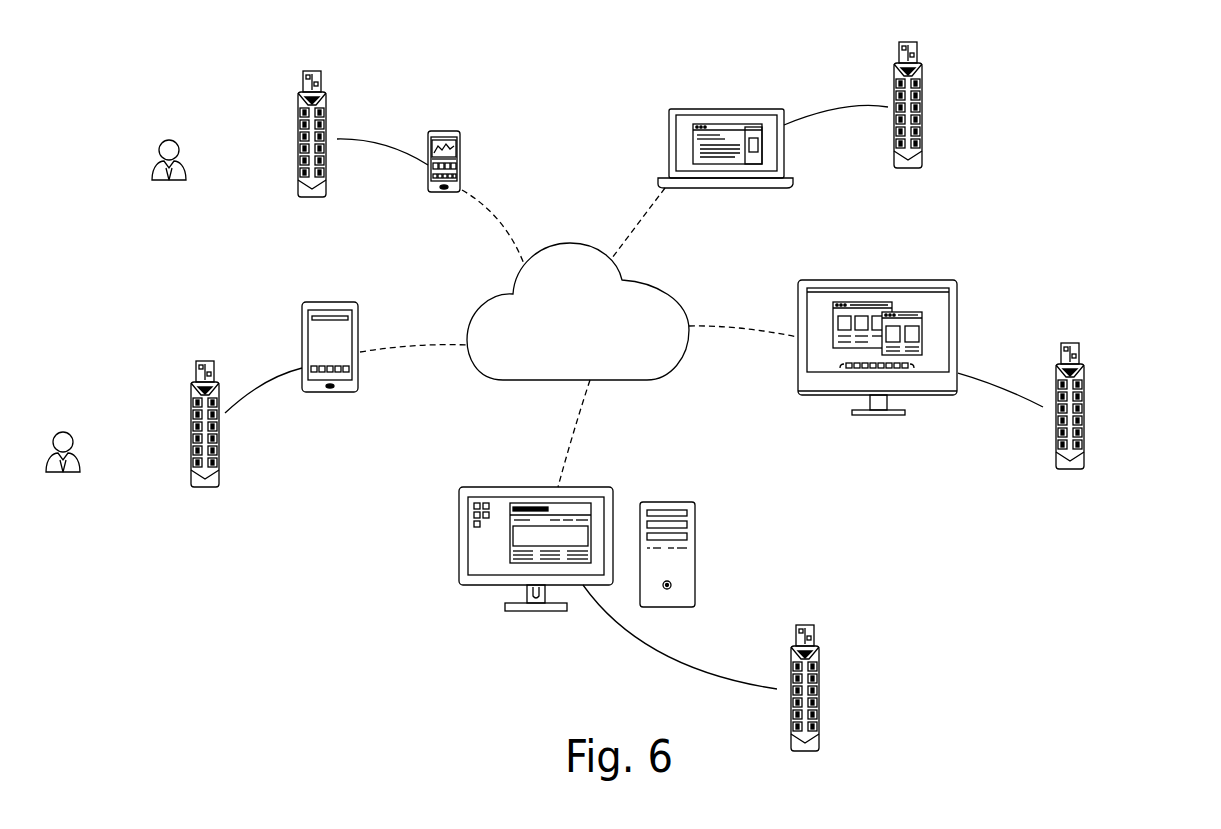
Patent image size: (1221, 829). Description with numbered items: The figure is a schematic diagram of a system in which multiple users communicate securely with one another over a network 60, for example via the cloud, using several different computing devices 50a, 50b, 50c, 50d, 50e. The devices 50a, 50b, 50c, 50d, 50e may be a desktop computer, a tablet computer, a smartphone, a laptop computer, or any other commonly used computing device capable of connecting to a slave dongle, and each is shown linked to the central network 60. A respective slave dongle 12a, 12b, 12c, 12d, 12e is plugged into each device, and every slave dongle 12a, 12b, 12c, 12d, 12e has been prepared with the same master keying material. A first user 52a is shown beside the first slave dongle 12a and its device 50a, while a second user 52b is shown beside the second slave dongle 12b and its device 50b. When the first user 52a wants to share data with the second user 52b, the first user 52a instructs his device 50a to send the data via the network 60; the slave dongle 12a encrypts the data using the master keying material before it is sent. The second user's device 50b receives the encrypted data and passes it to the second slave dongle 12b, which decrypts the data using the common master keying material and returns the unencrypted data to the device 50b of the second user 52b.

The slave dongle 12a is at (281, 139).
The slave dongle 12b is at (173, 429).
The slave dongle 12c is at (836, 694).
The slave dongle 12d is at (1100, 414).
The slave dongle 12e is at (940, 109).
The device 50a is at (442, 122).
The device 50b is at (331, 291).
The device 50c is at (483, 595).
The device 50d is at (878, 266).
The device 50e is at (726, 97).
The first user 52a is at (193, 167).
The second user 52b is at (88, 457).
The network 60 is at (578, 311).